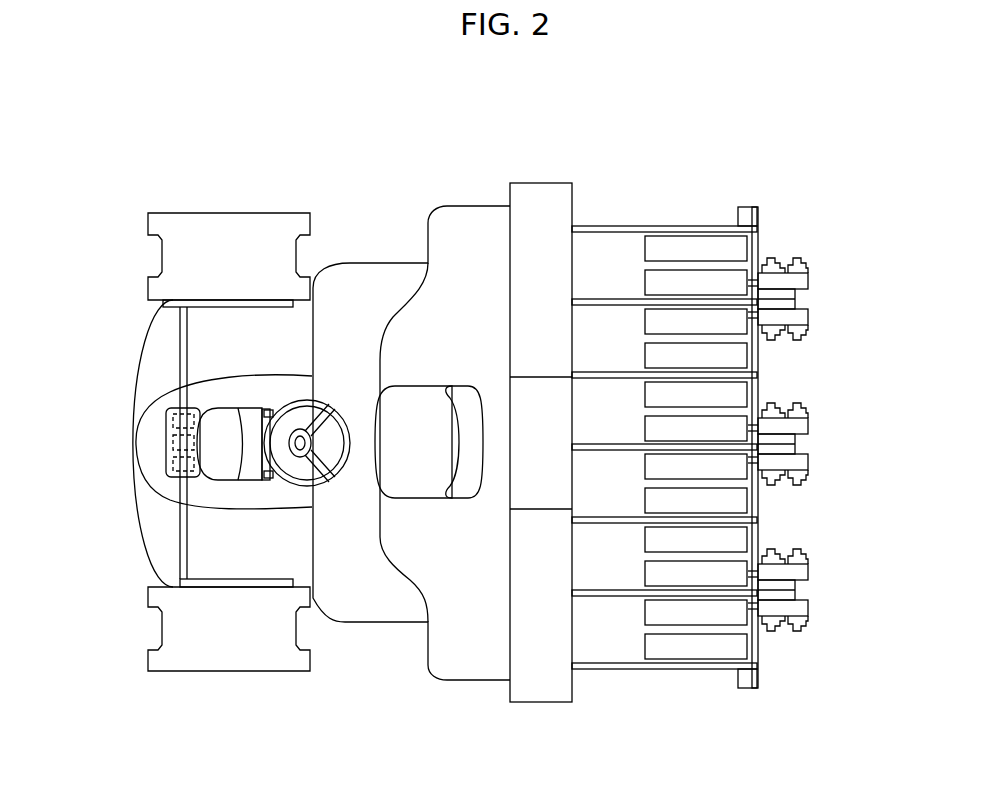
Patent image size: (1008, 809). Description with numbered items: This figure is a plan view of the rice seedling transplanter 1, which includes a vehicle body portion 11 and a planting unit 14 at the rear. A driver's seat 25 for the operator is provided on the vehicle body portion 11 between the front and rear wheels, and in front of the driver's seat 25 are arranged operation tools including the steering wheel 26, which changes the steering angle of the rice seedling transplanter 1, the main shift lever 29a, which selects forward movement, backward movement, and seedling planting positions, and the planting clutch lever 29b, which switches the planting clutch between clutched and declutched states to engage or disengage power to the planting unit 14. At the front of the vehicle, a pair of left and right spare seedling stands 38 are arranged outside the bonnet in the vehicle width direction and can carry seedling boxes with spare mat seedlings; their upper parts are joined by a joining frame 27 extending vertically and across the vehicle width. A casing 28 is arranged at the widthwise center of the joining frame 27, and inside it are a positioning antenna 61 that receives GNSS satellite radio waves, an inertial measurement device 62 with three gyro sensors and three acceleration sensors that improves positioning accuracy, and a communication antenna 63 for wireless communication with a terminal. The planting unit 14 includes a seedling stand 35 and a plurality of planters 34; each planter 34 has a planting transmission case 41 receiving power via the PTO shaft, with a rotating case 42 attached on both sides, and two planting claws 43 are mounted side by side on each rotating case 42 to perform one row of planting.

The rice seedling transplanter 1 is at (648, 109).
The vehicle body portion 11 is at (365, 193).
The planting unit 14 is at (695, 193).
The driver's seat 25 is at (428, 398).
The steering wheel 26 is at (322, 402).
The joining frame 27 is at (183, 553).
The casing 28 is at (167, 480).
The main shift lever 29a is at (268, 478).
The planting clutch lever 29b is at (268, 410).
The planter 34 is at (800, 448).
The seedling stand 35 is at (592, 247).
The spare seedling stand 38 is at (170, 250).
The planting transmission case 41 is at (795, 301).
The rotating case 42 is at (808, 281).
The planting claw 43 is at (790, 260).
The positioning antenna 61 is at (135, 419).
The inertial measurement device 62 is at (167, 412).
The communication antenna 63 is at (167, 457).